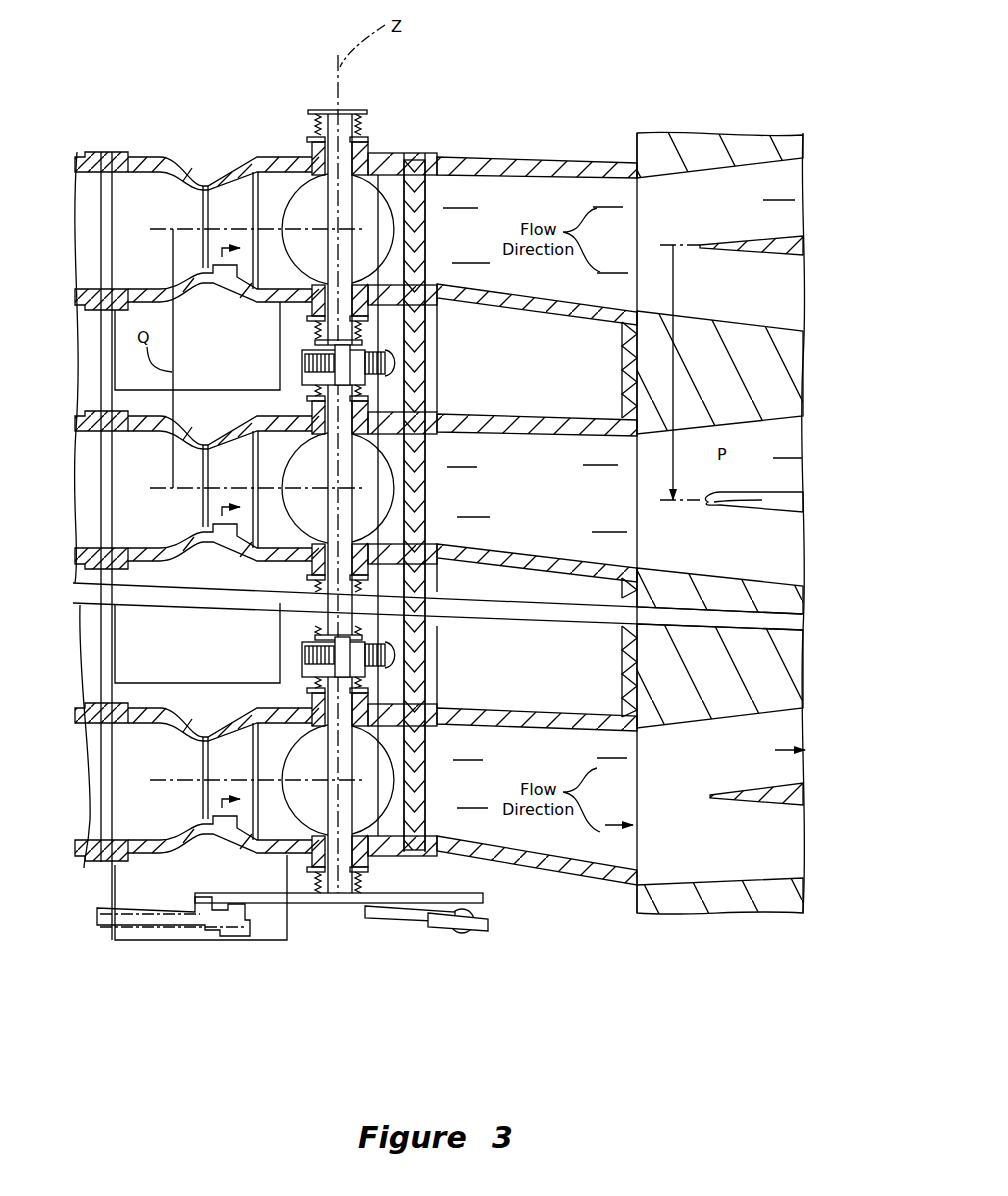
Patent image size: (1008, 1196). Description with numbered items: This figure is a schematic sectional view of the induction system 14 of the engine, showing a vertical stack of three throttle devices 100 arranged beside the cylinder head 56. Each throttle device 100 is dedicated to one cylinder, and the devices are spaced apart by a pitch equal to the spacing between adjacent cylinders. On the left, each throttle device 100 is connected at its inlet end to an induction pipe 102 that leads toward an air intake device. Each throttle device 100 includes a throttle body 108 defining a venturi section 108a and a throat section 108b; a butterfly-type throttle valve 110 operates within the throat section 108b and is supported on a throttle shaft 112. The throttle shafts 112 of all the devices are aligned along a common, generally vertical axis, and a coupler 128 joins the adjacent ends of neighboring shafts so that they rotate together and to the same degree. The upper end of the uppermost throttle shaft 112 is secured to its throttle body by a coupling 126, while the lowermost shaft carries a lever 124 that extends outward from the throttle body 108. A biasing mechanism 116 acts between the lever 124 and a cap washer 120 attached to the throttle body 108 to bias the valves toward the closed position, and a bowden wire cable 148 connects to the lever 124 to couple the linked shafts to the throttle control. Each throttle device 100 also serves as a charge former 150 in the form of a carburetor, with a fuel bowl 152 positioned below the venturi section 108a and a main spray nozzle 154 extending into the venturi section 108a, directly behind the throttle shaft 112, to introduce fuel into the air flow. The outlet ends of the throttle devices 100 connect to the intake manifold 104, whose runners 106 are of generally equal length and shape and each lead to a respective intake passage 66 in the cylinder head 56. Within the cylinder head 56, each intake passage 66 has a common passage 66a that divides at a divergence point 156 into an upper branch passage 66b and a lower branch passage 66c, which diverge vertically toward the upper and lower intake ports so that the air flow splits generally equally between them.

The induction system 14 is at (620, 53).
The cylinder head 56 is at (713, 102).
The intake passages 66 is at (628, 448).
The common passage 66a is at (688, 530).
The upper branch passage 66b is at (775, 183).
The lower branch passage 66c is at (773, 278).
The throttle device 100 is at (372, 147).
The induction pipe 102 is at (93, 155).
The intake manifold 104 is at (513, 192).
The runner 106 is at (556, 165).
The throttle body 108 is at (293, 160).
The venturi section 108a is at (193, 200).
The throat section 108b is at (273, 190).
The throttle valve 110 is at (373, 247).
The throttle shaft 112 is at (353, 200).
The biasing mechanism 116 is at (376, 883).
The cap washer 120 is at (380, 863).
The lever 124 is at (410, 893).
The coupling 126 is at (357, 107).
The coupler 128 is at (397, 363).
The bowden wire cable 148 is at (157, 933).
The charge former 150 is at (177, 93).
The fuel bowl 152 is at (208, 378).
The main spray nozzle 154 is at (240, 282).
The divergence point 156 is at (772, 293).